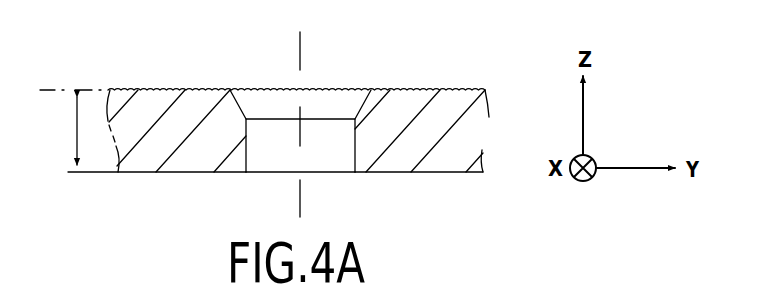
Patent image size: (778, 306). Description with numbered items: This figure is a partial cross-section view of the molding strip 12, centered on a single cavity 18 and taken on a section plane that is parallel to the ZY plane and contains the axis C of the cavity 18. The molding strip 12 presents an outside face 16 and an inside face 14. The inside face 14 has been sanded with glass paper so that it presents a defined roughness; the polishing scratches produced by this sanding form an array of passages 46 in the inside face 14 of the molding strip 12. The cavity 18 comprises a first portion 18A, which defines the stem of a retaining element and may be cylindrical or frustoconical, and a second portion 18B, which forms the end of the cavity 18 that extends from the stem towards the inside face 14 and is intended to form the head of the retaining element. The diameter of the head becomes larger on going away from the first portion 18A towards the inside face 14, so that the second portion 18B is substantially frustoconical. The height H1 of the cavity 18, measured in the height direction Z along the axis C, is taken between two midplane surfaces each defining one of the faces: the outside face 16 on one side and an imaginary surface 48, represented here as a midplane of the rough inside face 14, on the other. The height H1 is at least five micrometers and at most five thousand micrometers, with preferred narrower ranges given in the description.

The molding strip 12 is at (477, 136).
The inside face 14 is at (464, 87).
The outside face 16 is at (433, 178).
The cavity 18 is at (330, 117).
The first portion 18A is at (260, 159).
The second portion 18B is at (258, 101).
The passages 46 is at (158, 88).
The imaginary surface 48 is at (52, 88).
The height of the cavity H1 is at (60, 131).
The axis of the cavity C is at (300, 113).